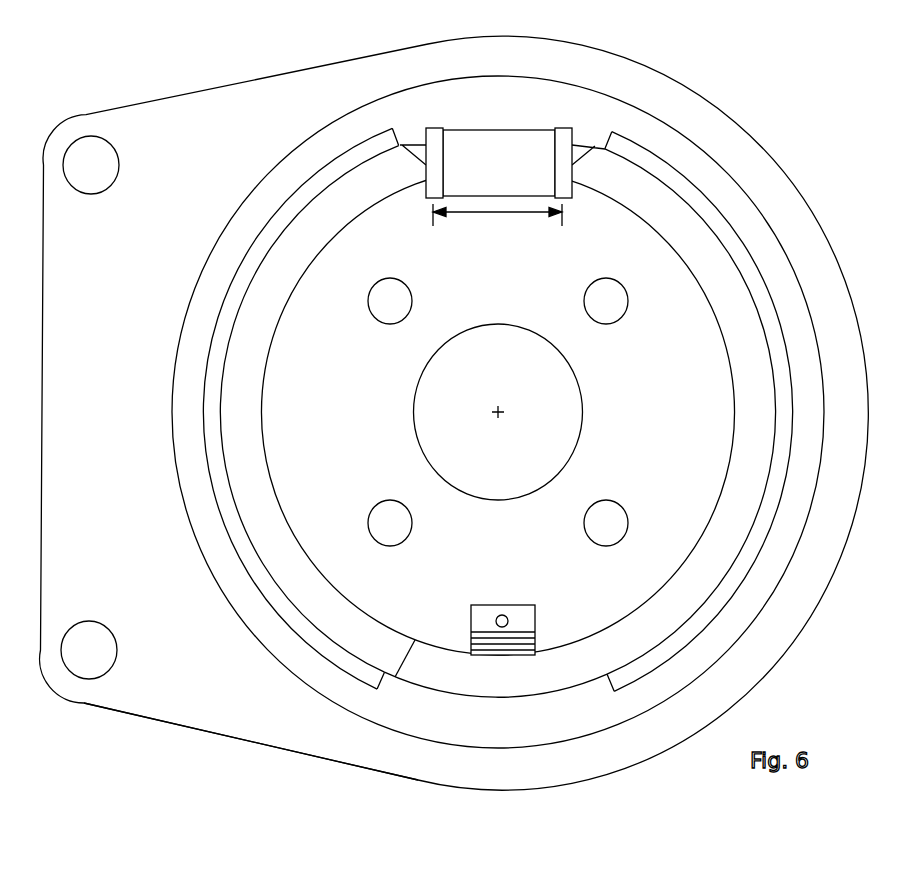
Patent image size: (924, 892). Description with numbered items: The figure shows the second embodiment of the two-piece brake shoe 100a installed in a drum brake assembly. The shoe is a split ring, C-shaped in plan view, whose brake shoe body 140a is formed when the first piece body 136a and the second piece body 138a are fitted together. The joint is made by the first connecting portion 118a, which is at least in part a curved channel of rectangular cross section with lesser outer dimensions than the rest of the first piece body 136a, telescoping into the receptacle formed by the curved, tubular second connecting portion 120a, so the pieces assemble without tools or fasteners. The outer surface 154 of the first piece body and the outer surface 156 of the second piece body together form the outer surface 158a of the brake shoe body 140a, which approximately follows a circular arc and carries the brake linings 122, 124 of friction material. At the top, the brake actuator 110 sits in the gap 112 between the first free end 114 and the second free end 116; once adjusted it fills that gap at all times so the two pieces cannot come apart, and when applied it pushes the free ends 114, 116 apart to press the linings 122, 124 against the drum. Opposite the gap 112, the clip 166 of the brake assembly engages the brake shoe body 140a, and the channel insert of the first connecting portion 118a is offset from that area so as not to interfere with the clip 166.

The two-piece brake shoe (second embodiment) 100a is at (481, 429).
The brake actuator 110 is at (466, 116).
The gap 112 is at (481, 213).
The first free end 114 is at (585, 158).
The second free end 116 is at (403, 167).
The first connecting portion 118a is at (442, 638).
The second connecting portion 120a is at (387, 620).
The brake lining 122 is at (779, 382).
The brake lining 124 is at (215, 480).
The first piece body 136a is at (756, 425).
The second piece body 138a is at (256, 470).
The brake shoe body 140a is at (518, 684).
The outer surface of first piece body 154 is at (755, 292).
The outer surface of second piece body 156 is at (237, 507).
The outer surface of brake shoe body 158a is at (436, 700).
The clip 166 is at (540, 619).